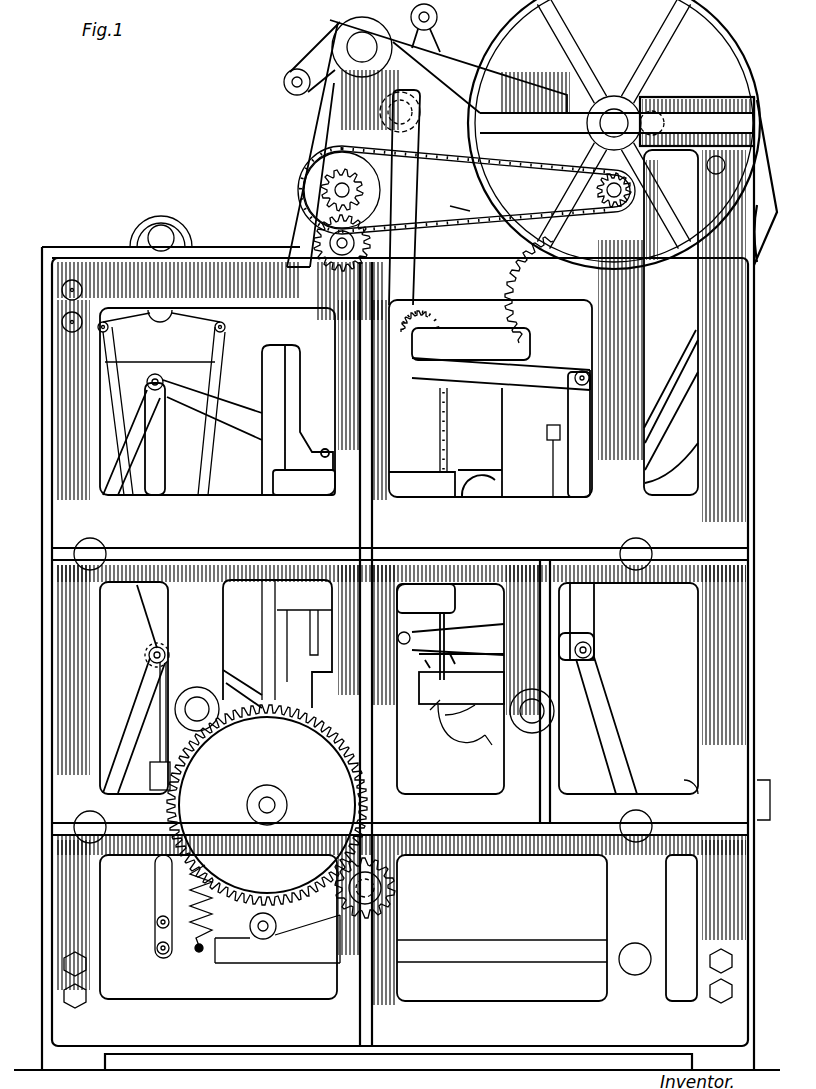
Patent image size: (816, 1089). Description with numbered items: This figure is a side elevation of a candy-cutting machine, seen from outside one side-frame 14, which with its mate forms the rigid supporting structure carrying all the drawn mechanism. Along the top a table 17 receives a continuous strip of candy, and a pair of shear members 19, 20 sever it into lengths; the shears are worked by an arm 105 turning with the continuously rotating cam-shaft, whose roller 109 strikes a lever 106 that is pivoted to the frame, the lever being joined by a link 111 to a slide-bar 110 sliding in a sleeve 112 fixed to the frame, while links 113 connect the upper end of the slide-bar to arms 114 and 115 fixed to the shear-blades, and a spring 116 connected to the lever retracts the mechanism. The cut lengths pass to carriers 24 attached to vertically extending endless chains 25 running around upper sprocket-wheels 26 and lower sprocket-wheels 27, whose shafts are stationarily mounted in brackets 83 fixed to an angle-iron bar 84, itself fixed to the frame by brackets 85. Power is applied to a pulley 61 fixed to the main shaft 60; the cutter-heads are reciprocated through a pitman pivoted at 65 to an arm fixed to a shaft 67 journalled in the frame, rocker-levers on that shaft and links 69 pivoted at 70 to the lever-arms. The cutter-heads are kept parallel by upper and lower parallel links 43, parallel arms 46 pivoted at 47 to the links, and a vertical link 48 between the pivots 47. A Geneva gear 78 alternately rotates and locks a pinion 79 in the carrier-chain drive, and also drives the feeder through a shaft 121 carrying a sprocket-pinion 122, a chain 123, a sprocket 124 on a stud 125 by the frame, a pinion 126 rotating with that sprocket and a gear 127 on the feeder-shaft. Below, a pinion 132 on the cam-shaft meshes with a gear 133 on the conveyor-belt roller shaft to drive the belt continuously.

The side-frame 14 is at (397, 583).
The table 17 is at (100, 247).
The shear member 19 is at (156, 220).
The shear member 20 is at (182, 232).
The carrier 24 is at (472, 498).
The endless chain 25 is at (450, 436).
The upper sprocket-wheel 26 is at (425, 305).
The lower sprocket-wheel 27 is at (460, 660).
The parallel link 43 is at (545, 362).
The parallel arm 46 is at (125, 470).
The pivot 47 is at (590, 380).
The vertical link 48 is at (578, 422).
The shaft 60 is at (622, 118).
The pulley 61 is at (582, 60).
The pivot 65 is at (336, 56).
The shaft 67 is at (362, 47).
The link 69 is at (290, 118).
The pivot 70 is at (428, 24).
The Geneva gear 78 is at (520, 302).
The pinion 79 is at (470, 328).
The bracket 83 is at (471, 344).
The angle-iron bar 84 is at (553, 497).
The bracket 85 is at (690, 356).
The arm 105 is at (318, 962).
The lever 106 is at (495, 960).
The roller 109 is at (258, 946).
The slide-bar 110 is at (166, 896).
The link 111 is at (158, 942).
The sleeve 112 is at (158, 792).
The link 113 is at (160, 358).
The arm 114 is at (190, 320).
The arm 115 is at (132, 320).
The spring 116 is at (212, 916).
The shaft 121 is at (632, 190).
The sprocket-pinion 122 is at (590, 200).
The chain 123 is at (448, 232).
The sprocket 124 is at (340, 190).
The stud 125 is at (322, 200).
The pinion 126 is at (320, 150).
The gear 127 is at (312, 243).
The pinion 132 is at (398, 892).
The gear 133 is at (368, 805).